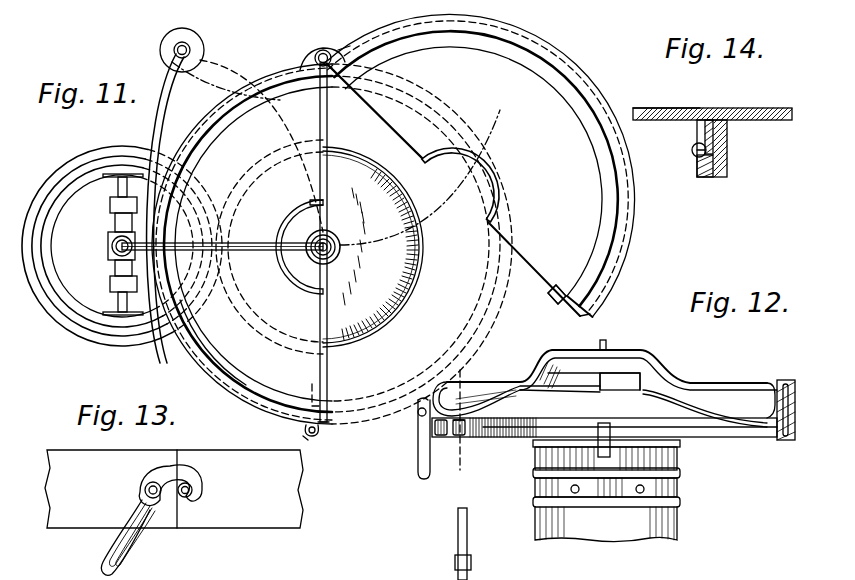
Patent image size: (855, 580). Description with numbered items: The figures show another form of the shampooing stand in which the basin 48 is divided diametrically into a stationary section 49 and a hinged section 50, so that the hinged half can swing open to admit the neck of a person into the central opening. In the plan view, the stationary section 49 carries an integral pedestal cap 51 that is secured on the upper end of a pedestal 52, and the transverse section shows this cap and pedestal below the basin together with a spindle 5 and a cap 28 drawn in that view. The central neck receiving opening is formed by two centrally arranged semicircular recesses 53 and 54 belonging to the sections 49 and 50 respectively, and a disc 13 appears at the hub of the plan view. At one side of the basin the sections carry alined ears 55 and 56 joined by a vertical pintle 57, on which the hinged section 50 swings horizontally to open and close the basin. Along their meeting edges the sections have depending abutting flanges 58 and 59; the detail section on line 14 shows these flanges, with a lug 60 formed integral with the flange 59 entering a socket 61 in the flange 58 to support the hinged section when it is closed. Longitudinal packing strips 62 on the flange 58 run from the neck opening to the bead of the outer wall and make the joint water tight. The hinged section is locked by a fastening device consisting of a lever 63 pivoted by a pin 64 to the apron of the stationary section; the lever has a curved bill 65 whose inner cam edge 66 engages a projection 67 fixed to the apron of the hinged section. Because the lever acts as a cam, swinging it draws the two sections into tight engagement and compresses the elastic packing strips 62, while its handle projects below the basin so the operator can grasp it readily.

In FIG. 11, the spindle / rod 5 is at (256, 242).
In FIG. 12, the spindle / rod 5 is at (610, 344).
In FIG. 11, the disc 13 is at (373, 247).
In FIG. 12, the section line 14 is at (516, 422).
In FIG. 12, the cap 28 is at (668, 352).
In FIG. 11, the basin 48 is at (268, 68).
In FIG. 11, the stationary section 49 is at (222, 342).
In FIG. 14, the stationary section 49 is at (650, 108).
In FIG. 11, the hinged section 50 is at (479, 165).
In FIG. 14, the hinged section 50 is at (770, 108).
In FIG. 11, the pedestal cap 51 is at (122, 245).
In FIG. 12, the pedestal cap 51 is at (536, 458).
In FIG. 11, the pedestal 52 is at (62, 330).
In FIG. 12, the pedestal 52 is at (678, 526).
In FIG. 11, the semicircular recess 53 is at (298, 284).
In FIG. 12, the semicircular recess 53 is at (620, 381).
In FIG. 11, the semicircular recess 54 is at (486, 176).
In FIG. 11, the ear 55 is at (308, 56).
In FIG. 12, the ear 55 is at (788, 440).
In FIG. 11, the ear 56 is at (342, 50).
In FIG. 12, the ear 56 is at (770, 428).
In FIG. 11, the pintle 57 is at (323, 49).
In FIG. 12, the pintle 57 is at (785, 380).
In FIG. 11, the flange 58 is at (307, 380).
In FIG. 14, the flange 58 is at (703, 178).
In FIG. 12, the flange 58 is at (496, 438).
In FIG. 11, the flange 59 is at (557, 288).
In FIG. 14, the flange 59 is at (728, 154).
In FIG. 11, the lug 60 is at (549, 307).
In FIG. 14, the lug 60 is at (694, 154).
In FIG. 14, the socket 61 is at (697, 152).
In FIG. 12, the socket 61 is at (456, 436).
In FIG. 11, the packing strips 62 is at (328, 130).
In FIG. 14, the packing strips 62 is at (704, 132).
In FIG. 12, the packing strips 62 is at (556, 404).
In FIG. 11, the lever 63 is at (316, 436).
In FIG. 12, the lever 63 is at (415, 449).
In FIG. 13, the lever 63 is at (108, 556).
In FIG. 11, the pin 64 is at (302, 432).
In FIG. 12, the pin 64 is at (416, 440).
In FIG. 13, the pin 64 is at (148, 486).
In FIG. 11, the curved bill 65 is at (330, 425).
In FIG. 12, the curved bill 65 is at (413, 409).
In FIG. 13, the curved bill 65 is at (194, 490).
In FIG. 13, the cam edge 66 is at (190, 503).
In FIG. 11, the projection 67 is at (594, 313).
In FIG. 13, the projection 67 is at (190, 468).